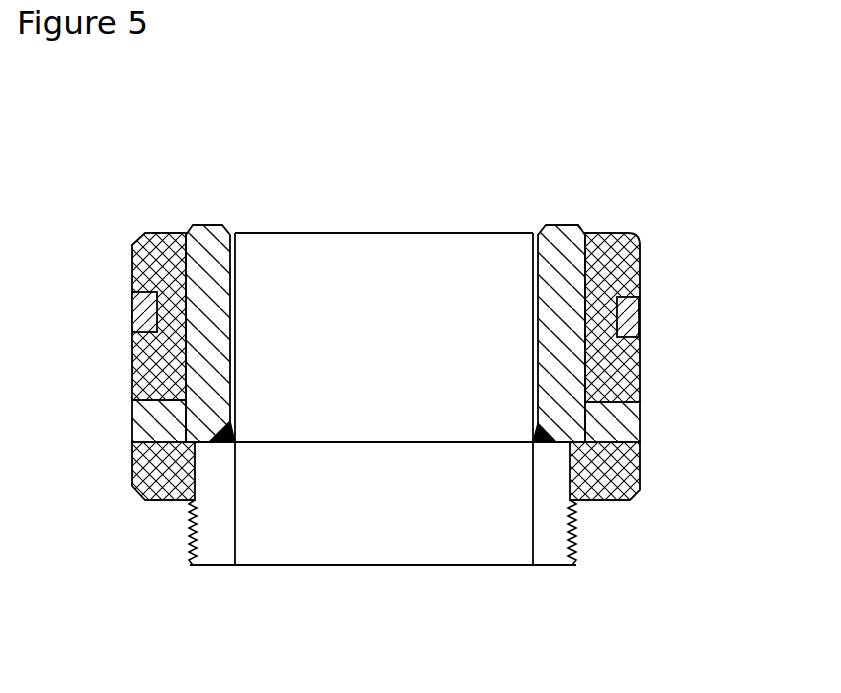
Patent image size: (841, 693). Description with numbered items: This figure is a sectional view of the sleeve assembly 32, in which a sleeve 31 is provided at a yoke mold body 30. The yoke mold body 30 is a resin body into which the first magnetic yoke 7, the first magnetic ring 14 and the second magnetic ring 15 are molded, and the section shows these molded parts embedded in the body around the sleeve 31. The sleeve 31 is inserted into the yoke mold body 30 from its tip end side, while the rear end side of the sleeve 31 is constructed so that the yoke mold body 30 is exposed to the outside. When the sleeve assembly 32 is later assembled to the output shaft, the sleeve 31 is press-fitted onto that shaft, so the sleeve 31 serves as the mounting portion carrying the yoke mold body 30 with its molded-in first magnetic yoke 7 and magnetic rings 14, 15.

The first magnetic yoke 7 is at (204, 227).
The first magnetic ring 14 is at (641, 420).
The second magnetic ring 15 is at (639, 317).
The yoke mold body 30 is at (640, 375).
The sleeve 31 is at (453, 566).
The sleeve assembly 32 is at (669, 190).